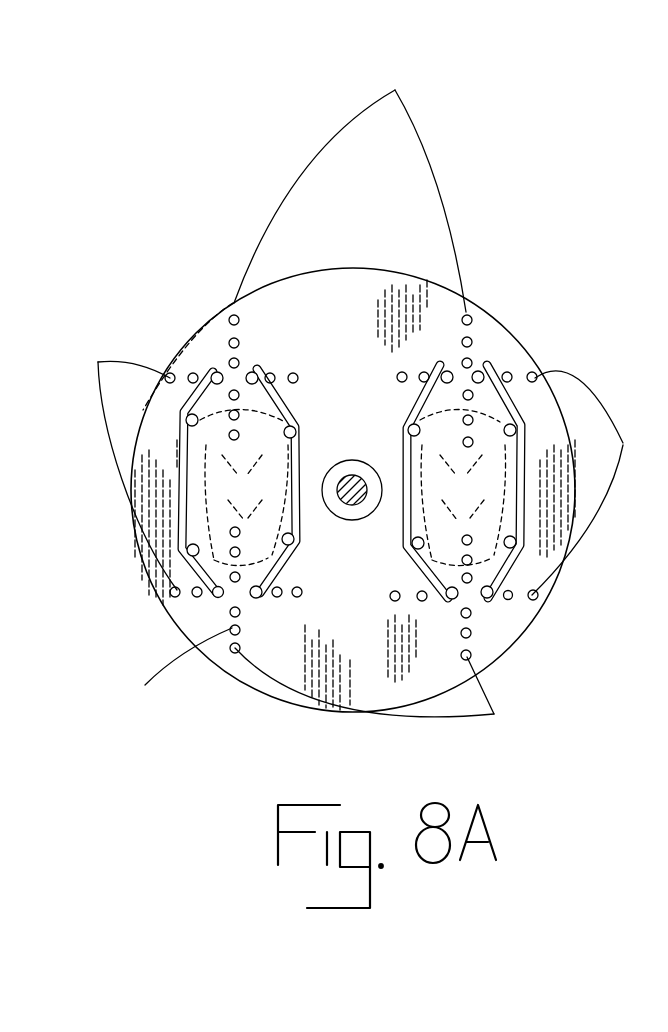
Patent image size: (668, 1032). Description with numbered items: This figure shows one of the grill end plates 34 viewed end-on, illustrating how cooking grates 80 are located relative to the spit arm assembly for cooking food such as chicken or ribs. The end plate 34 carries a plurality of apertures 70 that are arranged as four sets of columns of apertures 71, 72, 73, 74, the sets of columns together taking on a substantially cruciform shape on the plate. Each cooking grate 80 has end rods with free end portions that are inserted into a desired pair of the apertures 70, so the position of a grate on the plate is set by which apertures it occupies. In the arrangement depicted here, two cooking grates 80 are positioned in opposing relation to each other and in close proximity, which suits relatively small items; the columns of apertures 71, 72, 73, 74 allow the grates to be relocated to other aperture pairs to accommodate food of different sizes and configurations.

The grill end plate 34 is at (328, 283).
The apertures 70 is at (175, 676).
The first column of apertures 71 is at (350, 185).
The second column of apertures 72 is at (595, 483).
The third column of apertures 73 is at (387, 691).
The fourth column of apertures 74 is at (118, 467).
The cooking grate 80 is at (192, 398).